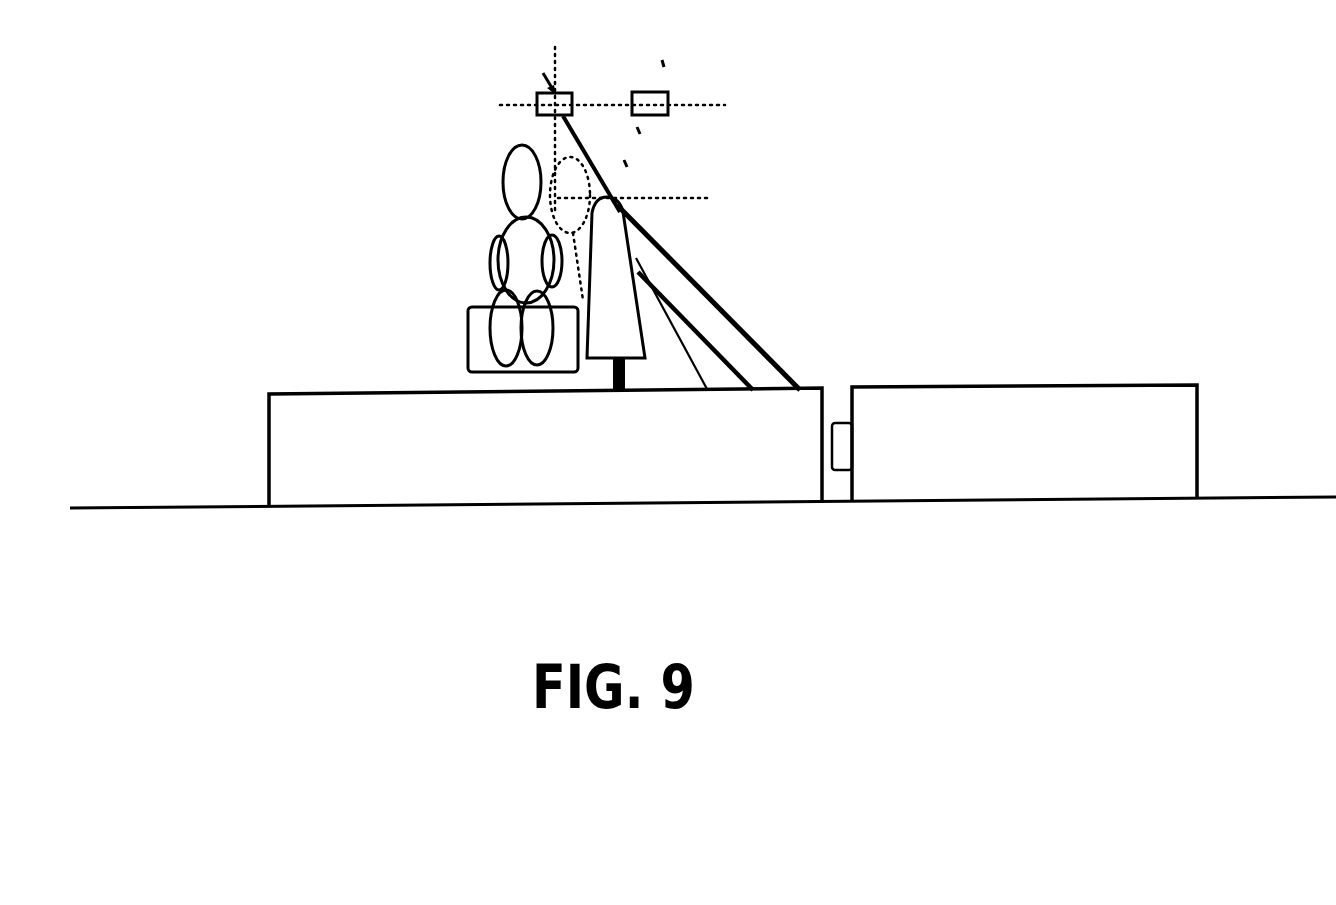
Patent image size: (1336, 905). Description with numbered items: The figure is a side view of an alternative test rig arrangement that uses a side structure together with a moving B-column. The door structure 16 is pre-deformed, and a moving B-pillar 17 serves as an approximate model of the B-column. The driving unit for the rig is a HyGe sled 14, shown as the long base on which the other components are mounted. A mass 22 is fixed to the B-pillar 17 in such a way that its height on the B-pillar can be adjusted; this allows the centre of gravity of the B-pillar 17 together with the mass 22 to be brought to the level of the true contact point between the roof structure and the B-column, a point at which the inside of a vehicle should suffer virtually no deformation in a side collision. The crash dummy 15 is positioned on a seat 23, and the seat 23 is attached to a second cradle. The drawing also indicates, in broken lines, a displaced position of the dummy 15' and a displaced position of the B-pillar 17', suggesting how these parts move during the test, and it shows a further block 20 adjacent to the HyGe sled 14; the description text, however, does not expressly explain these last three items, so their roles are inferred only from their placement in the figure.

The HyGe sled 14 is at (485, 490).
The crash dummy 15 is at (464, 255).
The occupant in displaced position 15' is at (682, 220).
The door structure 16 is at (638, 268).
The moving B-pillar 17 is at (490, 152).
The sensor in displaced position 17' is at (659, 102).
The vehicle front compartment 20 is at (962, 468).
The mass 22 is at (537, 98).
The seat 23 is at (468, 343).